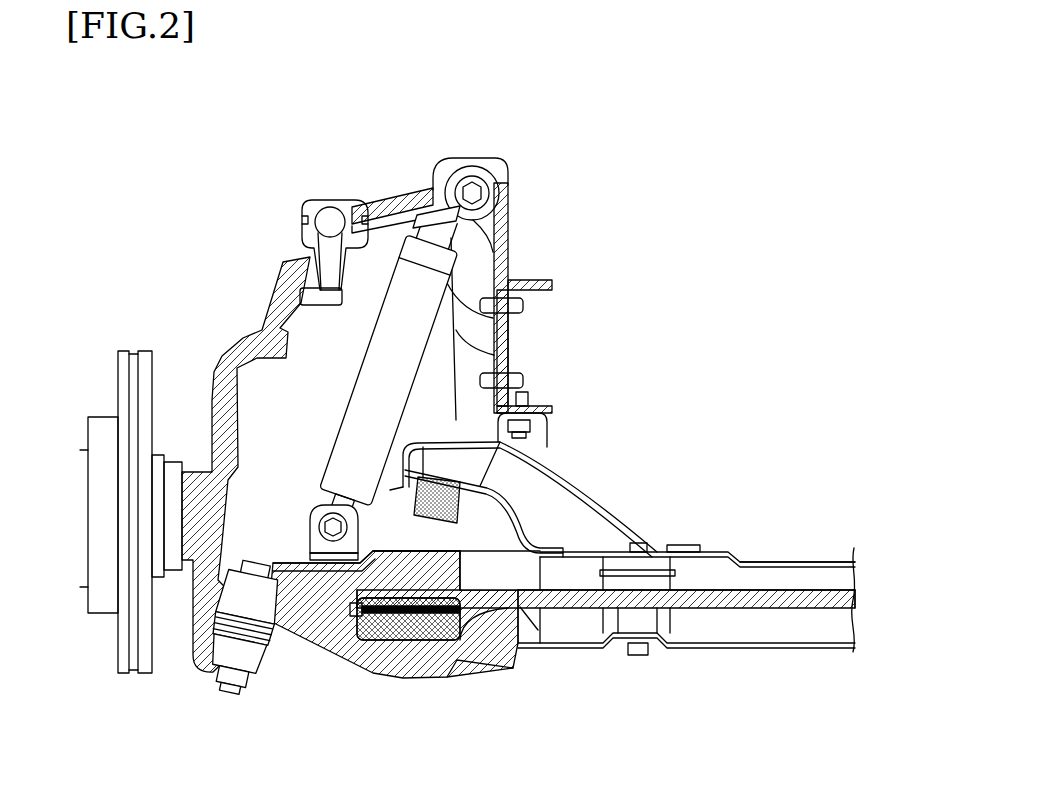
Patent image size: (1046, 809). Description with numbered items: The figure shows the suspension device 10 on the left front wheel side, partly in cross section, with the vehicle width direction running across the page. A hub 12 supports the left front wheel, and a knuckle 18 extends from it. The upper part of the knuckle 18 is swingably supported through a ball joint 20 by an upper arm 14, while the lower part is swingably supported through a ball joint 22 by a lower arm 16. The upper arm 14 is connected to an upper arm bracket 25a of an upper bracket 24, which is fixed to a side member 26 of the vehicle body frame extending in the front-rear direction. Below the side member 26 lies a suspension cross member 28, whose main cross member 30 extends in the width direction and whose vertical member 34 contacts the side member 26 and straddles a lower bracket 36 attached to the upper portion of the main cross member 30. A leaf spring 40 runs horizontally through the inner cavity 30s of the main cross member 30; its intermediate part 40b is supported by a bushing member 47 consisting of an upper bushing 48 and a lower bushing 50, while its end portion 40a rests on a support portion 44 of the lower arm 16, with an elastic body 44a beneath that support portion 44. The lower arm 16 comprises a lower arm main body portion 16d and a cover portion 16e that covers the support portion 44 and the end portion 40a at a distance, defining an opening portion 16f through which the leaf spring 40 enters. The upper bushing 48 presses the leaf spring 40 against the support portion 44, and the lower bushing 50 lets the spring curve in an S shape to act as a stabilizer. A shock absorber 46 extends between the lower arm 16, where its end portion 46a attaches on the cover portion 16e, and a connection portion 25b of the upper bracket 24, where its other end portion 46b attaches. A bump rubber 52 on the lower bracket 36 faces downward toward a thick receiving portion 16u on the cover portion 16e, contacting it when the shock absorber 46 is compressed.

The suspension device 10 is at (699, 168).
The hub 12 is at (133, 328).
The upper arm 14 is at (382, 196).
The lower arm 16 is at (365, 672).
The lower arm main body portion 16d is at (425, 670).
The cover portion 16e is at (365, 560).
The opening portion 16f is at (480, 625).
The receiving portion 16u is at (462, 546).
The knuckle 18 is at (245, 332).
The ball joint 20 is at (304, 222).
The ball joint 22 is at (240, 582).
The bracket 24 is at (508, 270).
The upper arm bracket 25a is at (500, 168).
The connection portion 25b is at (509, 235).
The side member 26 is at (512, 348).
The suspension cross member 28 is at (645, 693).
The main cross member 30 is at (745, 652).
The inner cavity 30s is at (757, 570).
The vertical member 34 is at (549, 433).
The bracket 36 is at (600, 497).
The leaf spring 40 is at (698, 612).
The end portion 40a is at (350, 660).
The intermediate part 40b is at (808, 612).
The support portion 44 is at (400, 650).
The elastic body 44a is at (383, 655).
The shock absorber 46 is at (355, 388).
The end portion 46a is at (318, 505).
The end portion 46b is at (410, 244).
The bushing member 47 is at (705, 548).
The upper bushing 48 is at (650, 548).
The lower bushing 50 is at (616, 626).
The bump rubber 52 is at (495, 512).